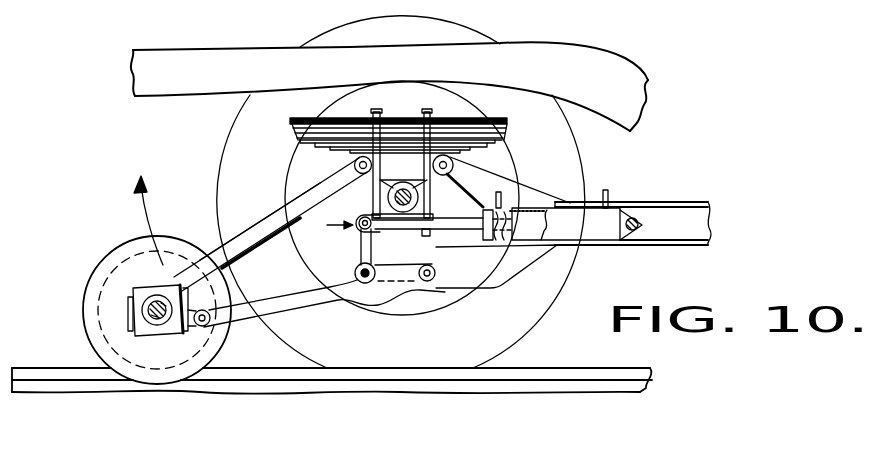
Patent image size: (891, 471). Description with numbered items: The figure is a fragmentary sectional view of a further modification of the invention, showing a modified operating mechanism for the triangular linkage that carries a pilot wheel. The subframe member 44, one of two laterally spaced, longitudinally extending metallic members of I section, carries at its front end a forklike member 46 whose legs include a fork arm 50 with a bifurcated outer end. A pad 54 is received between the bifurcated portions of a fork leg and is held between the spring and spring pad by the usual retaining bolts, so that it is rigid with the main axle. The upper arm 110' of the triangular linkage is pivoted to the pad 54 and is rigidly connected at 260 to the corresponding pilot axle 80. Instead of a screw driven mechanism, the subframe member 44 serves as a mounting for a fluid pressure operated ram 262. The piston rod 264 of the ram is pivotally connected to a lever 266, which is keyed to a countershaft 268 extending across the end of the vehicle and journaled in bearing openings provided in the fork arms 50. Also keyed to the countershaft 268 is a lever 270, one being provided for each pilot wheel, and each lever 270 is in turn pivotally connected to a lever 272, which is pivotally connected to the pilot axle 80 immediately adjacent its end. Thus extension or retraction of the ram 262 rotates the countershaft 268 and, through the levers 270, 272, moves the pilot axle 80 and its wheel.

The frame member 44 is at (660, 212).
The forklike member 46 is at (512, 264).
The leg 50 is at (467, 277).
The pad 54 is at (403, 160).
The axle 80 is at (238, 258).
The upper arm 110' is at (260, 219).
The rigid connection 260 is at (150, 284).
The fluid pressure operated ram 262 is at (535, 225).
The piston rod 264 is at (460, 220).
The lever 266 is at (358, 248).
The countershaft 268 is at (371, 266).
The lever 270 is at (385, 266).
The lever 272 is at (245, 325).